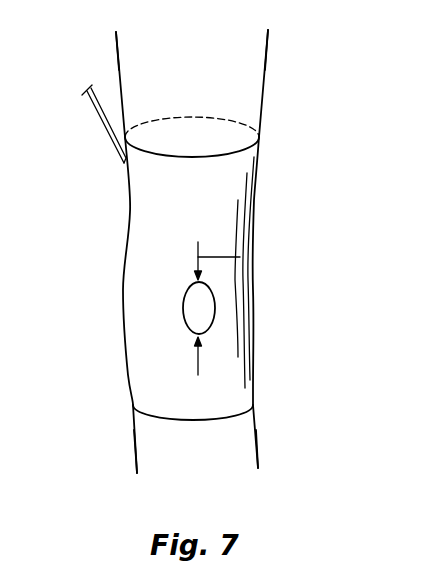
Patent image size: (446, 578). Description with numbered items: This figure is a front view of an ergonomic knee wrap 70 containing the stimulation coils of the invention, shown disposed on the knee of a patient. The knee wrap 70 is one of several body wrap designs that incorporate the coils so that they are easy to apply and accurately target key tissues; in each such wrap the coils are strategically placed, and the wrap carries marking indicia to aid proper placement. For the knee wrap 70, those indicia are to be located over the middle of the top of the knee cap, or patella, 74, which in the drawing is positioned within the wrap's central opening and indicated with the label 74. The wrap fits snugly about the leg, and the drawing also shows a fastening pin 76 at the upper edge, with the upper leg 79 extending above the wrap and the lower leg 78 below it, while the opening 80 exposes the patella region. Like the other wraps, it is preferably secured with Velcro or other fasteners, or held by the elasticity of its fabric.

The knee wrap 70 is at (157, 296).
The knee cap (patella) 74 is at (240, 257).
The fastening pin 76 is at (97, 113).
The lower leg 78 is at (177, 443).
The upper leg 79 is at (235, 83).
The patella opening 80 is at (200, 308).